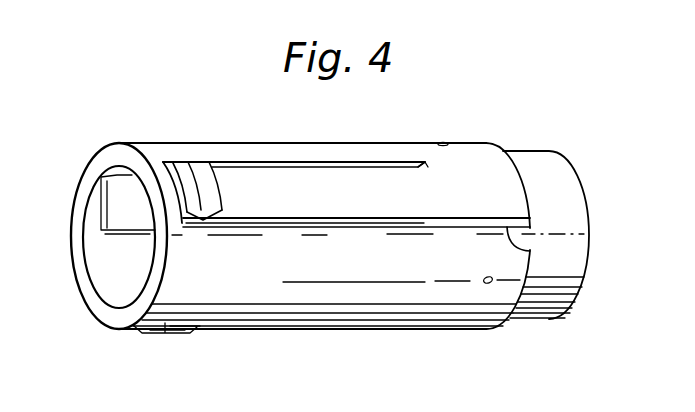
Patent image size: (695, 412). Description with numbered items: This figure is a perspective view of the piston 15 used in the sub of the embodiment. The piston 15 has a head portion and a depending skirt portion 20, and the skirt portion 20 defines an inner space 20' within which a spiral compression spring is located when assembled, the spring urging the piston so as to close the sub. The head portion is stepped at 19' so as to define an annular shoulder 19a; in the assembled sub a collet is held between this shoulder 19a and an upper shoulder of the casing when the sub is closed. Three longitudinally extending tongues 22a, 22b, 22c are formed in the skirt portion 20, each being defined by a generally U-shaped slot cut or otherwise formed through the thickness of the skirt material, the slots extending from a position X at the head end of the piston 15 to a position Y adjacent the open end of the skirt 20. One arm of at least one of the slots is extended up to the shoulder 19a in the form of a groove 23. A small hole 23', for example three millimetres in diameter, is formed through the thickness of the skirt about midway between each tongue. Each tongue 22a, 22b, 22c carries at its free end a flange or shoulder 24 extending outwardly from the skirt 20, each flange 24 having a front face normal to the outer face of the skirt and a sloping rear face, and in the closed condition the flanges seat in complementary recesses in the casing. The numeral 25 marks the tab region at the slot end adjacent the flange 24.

The piston 15 is at (299, 140).
The step of the head portion 19' is at (543, 210).
The annular shoulder 19a is at (511, 322).
The skirt portion 20 is at (351, 236).
The inner space 20' is at (97, 237).
The tongue 22a is at (360, 201).
The tongue 22b is at (132, 203).
The tongue 22c is at (165, 338).
The groove 23 is at (569, 244).
The hole 23' is at (460, 277).
The flange 24 is at (232, 198).
The curved tab 25 is at (183, 177).
The position at the head end of the piston X is at (432, 231).
The position adjacent the open end of the skirt Y is at (175, 157).